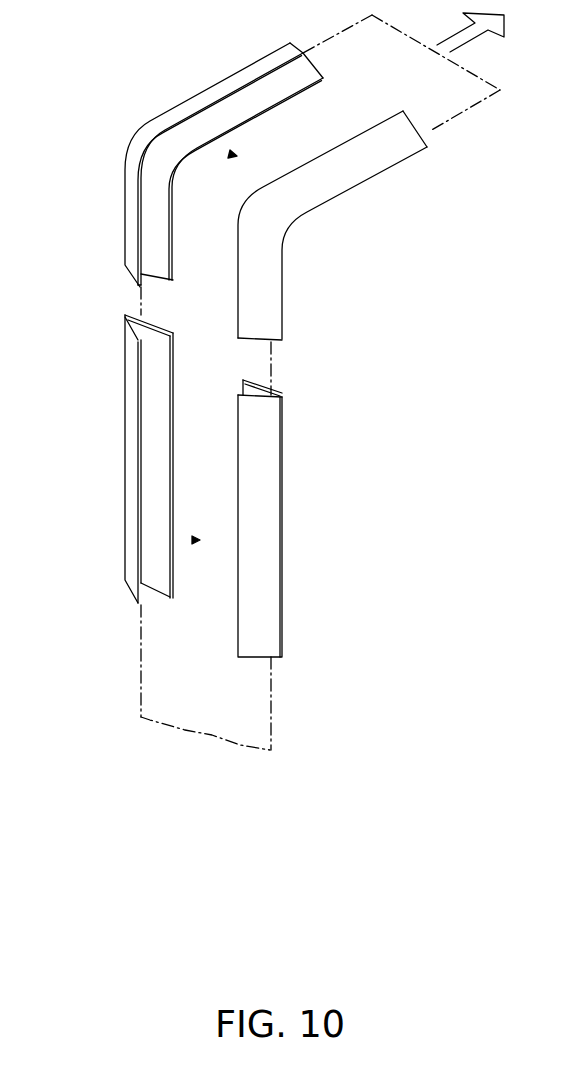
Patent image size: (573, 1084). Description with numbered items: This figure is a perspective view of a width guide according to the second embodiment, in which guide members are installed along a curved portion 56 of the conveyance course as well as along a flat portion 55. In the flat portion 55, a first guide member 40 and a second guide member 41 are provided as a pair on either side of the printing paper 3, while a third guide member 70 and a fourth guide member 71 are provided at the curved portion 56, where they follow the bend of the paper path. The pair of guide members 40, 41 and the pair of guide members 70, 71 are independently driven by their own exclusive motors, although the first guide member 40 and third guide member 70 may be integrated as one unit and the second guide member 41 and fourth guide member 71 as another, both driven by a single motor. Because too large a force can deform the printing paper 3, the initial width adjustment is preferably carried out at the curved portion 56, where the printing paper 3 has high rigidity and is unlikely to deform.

The printing paper 3 is at (140, 696).
The first guide member 40 is at (282, 513).
The second guide member 41 is at (125, 440).
The flat portion 55 is at (196, 540).
The curved portion 56 is at (233, 156).
The third guide member 70 is at (272, 288).
The fourth guide member 71 is at (125, 215).